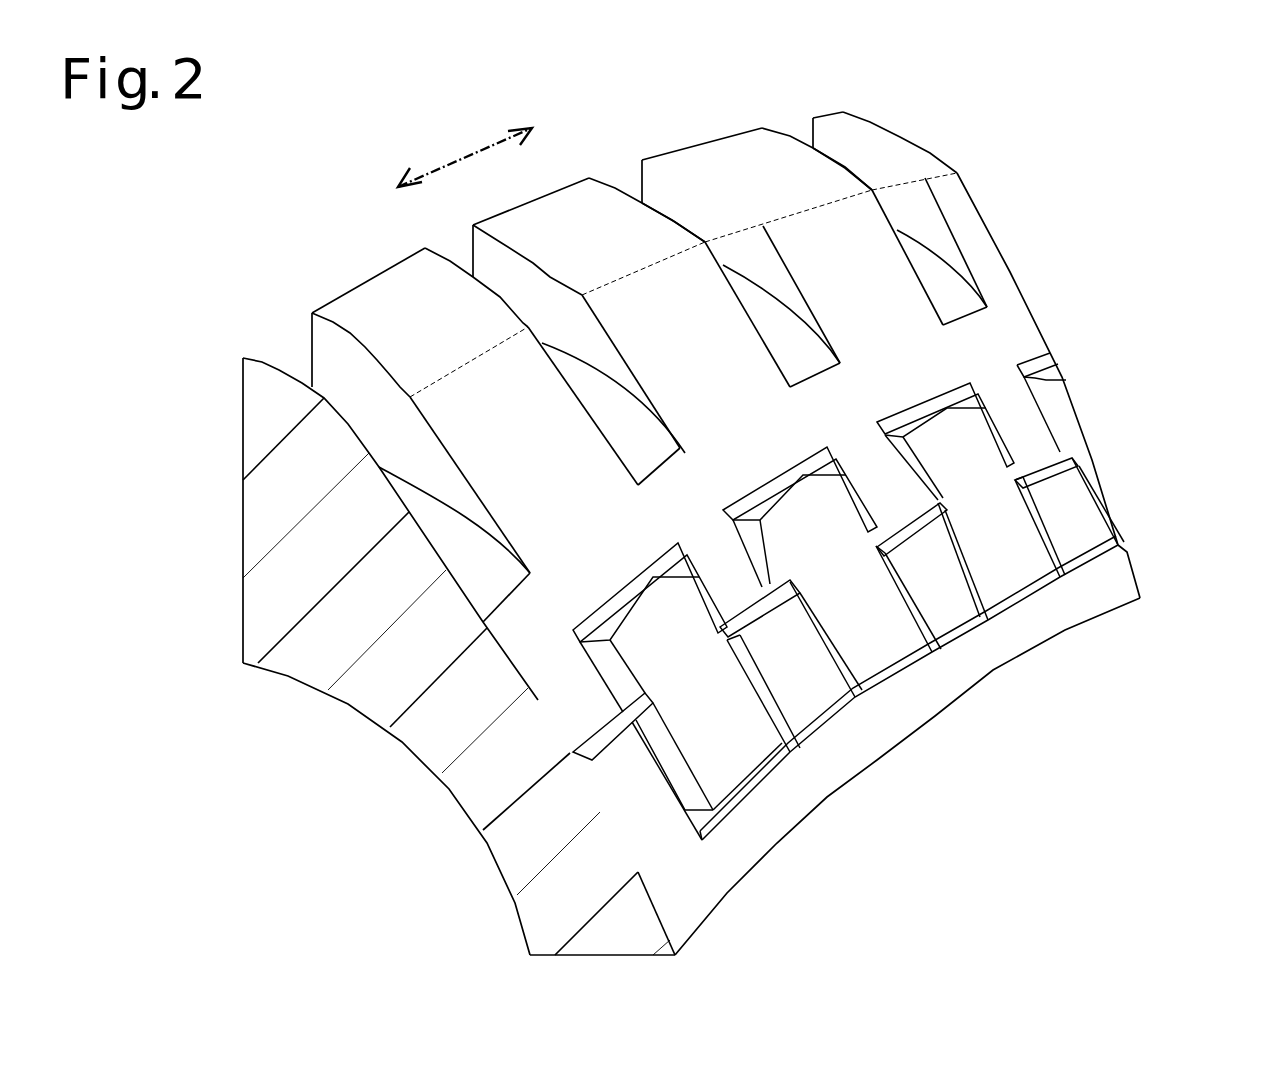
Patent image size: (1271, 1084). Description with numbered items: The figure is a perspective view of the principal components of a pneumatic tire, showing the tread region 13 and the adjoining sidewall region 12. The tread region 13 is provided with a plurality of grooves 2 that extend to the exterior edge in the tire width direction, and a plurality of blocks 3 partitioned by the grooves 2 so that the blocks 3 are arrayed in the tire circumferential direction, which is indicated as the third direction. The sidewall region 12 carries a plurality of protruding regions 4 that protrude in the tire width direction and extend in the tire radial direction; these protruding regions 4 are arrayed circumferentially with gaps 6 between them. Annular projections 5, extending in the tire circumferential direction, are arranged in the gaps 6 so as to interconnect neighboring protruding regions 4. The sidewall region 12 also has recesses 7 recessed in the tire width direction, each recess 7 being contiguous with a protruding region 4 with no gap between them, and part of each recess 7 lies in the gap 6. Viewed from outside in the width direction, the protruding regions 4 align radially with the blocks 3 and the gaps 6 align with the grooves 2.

The groove 2 is at (715, 331).
The block 3 is at (398, 308).
The protruding region 4 is at (737, 757).
The annular projection 5 is at (596, 725).
The gap 6 is at (797, 680).
The recess 7 is at (622, 593).
The sidewall region 12 is at (1143, 422).
The tread region 13 is at (362, 242).